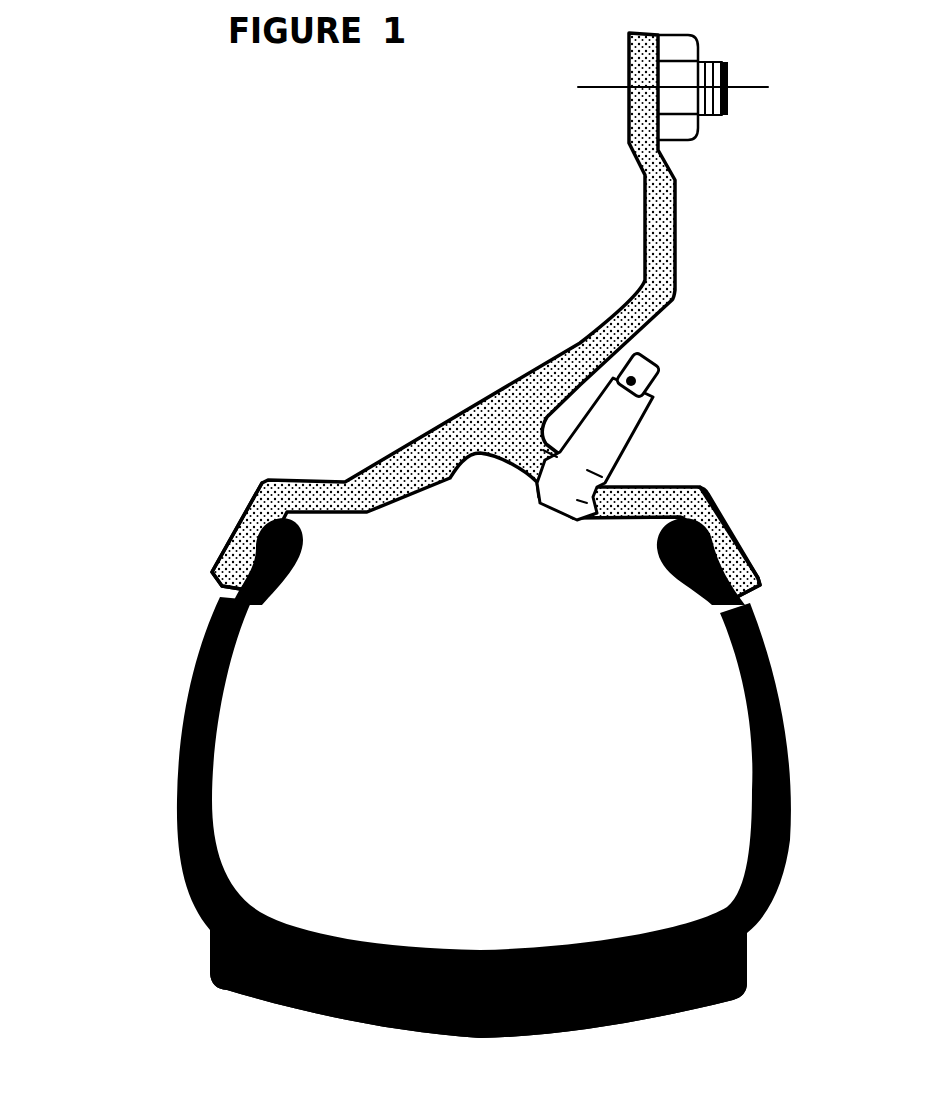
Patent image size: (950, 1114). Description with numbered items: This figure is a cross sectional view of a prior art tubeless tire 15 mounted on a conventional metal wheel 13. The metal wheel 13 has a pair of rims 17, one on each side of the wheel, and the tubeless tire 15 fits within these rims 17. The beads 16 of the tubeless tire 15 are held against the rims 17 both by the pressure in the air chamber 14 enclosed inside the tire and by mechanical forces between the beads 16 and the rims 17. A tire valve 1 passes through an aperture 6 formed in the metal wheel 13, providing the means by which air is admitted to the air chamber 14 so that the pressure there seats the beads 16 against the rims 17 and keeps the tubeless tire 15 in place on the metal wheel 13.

The tire valve 1 is at (462, 555).
The aperture 6 is at (572, 478).
The metal wheel 13 is at (352, 493).
The air chamber 14 is at (375, 840).
The tubeless tire 15 is at (303, 1015).
The beads 16 is at (575, 672).
The rims 17 is at (845, 563).